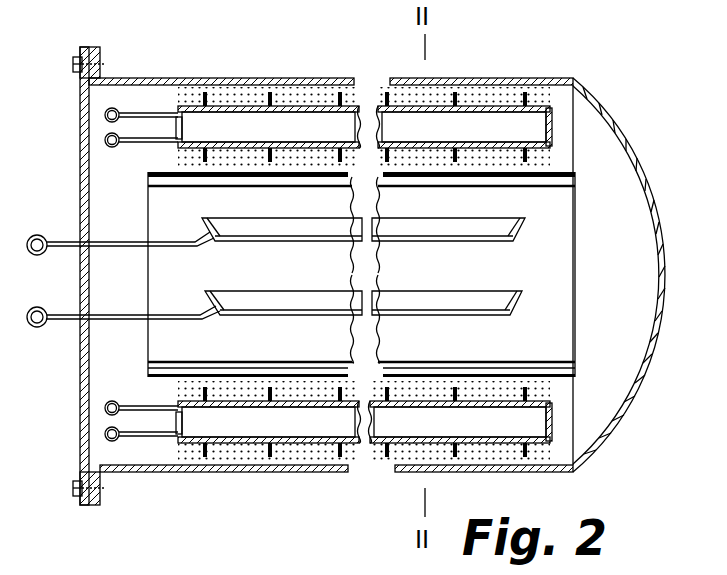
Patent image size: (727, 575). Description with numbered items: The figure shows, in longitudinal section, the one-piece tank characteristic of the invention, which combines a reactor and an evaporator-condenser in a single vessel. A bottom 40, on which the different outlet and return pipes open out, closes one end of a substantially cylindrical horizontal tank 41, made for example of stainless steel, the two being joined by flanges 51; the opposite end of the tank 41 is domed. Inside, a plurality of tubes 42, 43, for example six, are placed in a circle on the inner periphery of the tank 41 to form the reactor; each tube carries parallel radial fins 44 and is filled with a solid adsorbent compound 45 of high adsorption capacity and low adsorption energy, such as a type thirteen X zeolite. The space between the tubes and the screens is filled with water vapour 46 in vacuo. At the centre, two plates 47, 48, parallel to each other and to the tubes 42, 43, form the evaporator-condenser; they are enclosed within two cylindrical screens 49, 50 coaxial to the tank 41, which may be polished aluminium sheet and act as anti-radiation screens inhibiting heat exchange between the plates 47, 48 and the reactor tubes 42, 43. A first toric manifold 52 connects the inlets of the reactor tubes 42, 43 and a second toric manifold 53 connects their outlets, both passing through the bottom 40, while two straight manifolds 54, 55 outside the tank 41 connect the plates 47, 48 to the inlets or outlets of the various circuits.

The bottom 40 is at (80, 370).
The horizontal tank 41 is at (505, 80).
The tube 42 is at (205, 110).
The tube 43 is at (230, 443).
The parallel radial fins 44 is at (270, 98).
The solid adsorbent compound 45 is at (430, 97).
The water vapour 46 is at (613, 192).
The plate 47 is at (457, 243).
The plate 48 is at (465, 316).
The outer cylindrical screen 49 is at (552, 176).
The cylindrical screen 50 is at (550, 362).
The flange 51 is at (103, 68).
The first toric manifold 52 is at (103, 110).
The second toric manifold 53 is at (103, 139).
The straight manifold 54 is at (62, 208).
The straight manifold 55 is at (33, 307).